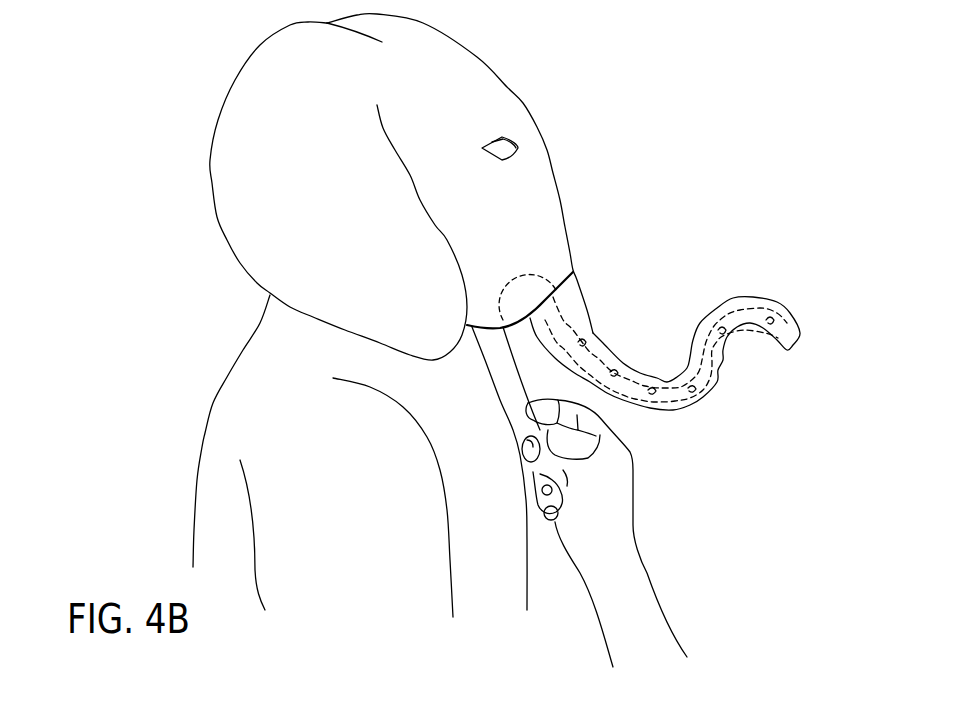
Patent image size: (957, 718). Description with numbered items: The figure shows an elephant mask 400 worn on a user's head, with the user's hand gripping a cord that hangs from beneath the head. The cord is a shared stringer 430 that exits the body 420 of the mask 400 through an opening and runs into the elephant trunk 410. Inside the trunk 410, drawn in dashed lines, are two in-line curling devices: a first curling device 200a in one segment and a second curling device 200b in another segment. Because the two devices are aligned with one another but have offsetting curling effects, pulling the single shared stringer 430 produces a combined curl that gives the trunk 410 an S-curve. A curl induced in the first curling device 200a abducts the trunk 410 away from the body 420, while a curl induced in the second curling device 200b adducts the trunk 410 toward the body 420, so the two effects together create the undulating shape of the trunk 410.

The mask 400 is at (760, 246).
The elephant trunk 410 is at (797, 325).
The body 420 is at (505, 100).
The shared stringer 430 is at (517, 282).
The first curling device 200a is at (698, 390).
The second curling device 200b is at (738, 310).